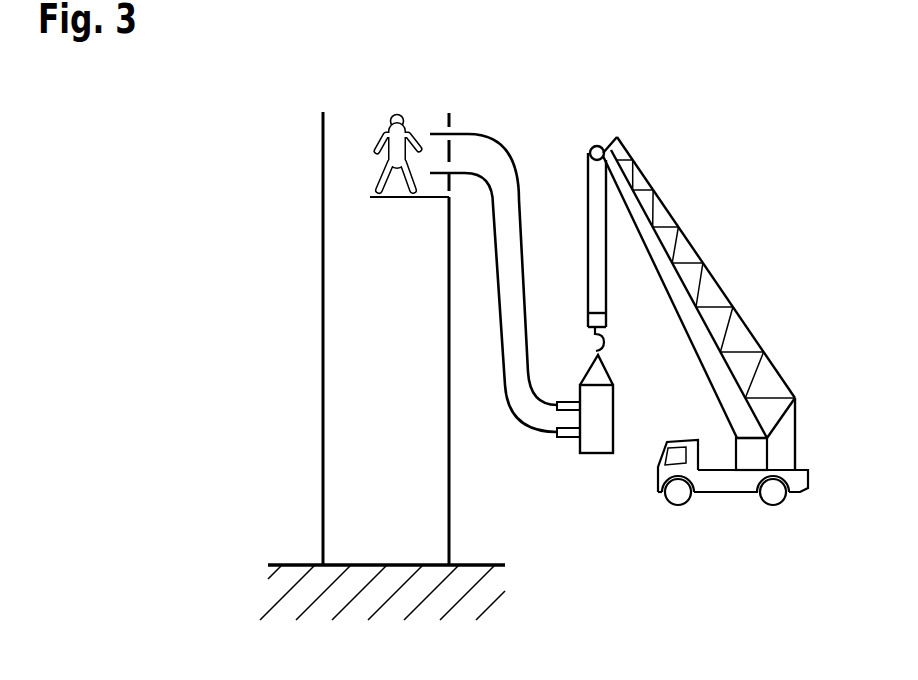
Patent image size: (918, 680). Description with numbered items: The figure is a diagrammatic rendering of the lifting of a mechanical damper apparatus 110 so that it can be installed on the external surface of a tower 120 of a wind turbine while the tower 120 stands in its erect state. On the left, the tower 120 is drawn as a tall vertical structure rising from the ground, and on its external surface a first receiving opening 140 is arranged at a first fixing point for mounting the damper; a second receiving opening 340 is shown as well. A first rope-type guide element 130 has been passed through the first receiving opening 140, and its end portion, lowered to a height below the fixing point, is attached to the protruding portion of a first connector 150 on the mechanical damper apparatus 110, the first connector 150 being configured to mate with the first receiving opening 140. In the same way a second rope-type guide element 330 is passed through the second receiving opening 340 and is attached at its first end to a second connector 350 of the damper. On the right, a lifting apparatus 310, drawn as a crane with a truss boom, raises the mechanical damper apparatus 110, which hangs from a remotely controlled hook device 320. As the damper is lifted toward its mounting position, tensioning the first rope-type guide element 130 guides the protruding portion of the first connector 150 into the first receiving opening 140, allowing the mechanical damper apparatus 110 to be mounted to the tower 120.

The mechanical damper apparatus 110 is at (599, 455).
The tower 120 is at (322, 335).
The first rope-type guide element 130 is at (510, 186).
The first receiving opening 140 is at (462, 120).
The first connector 150 is at (558, 402).
The lifting apparatus 310 is at (695, 245).
The remotely controlled hook device 320 is at (608, 348).
The second rope-type guide element 330 is at (518, 420).
The second receiving opening 340 is at (438, 196).
The second connector 350 is at (567, 437).